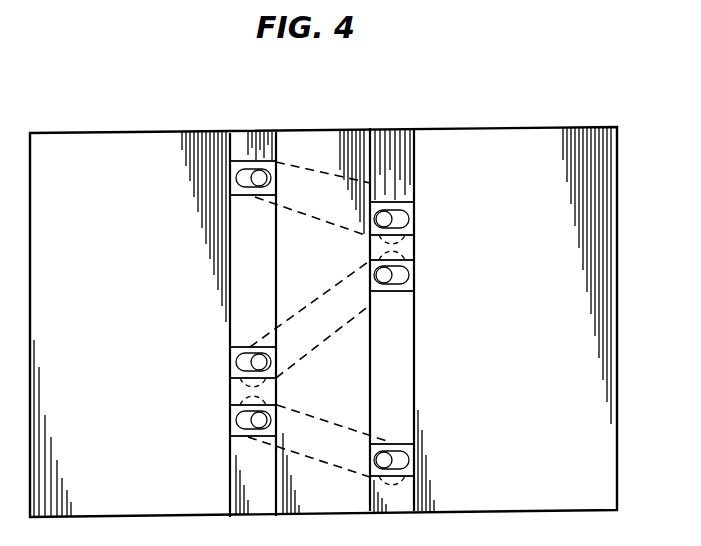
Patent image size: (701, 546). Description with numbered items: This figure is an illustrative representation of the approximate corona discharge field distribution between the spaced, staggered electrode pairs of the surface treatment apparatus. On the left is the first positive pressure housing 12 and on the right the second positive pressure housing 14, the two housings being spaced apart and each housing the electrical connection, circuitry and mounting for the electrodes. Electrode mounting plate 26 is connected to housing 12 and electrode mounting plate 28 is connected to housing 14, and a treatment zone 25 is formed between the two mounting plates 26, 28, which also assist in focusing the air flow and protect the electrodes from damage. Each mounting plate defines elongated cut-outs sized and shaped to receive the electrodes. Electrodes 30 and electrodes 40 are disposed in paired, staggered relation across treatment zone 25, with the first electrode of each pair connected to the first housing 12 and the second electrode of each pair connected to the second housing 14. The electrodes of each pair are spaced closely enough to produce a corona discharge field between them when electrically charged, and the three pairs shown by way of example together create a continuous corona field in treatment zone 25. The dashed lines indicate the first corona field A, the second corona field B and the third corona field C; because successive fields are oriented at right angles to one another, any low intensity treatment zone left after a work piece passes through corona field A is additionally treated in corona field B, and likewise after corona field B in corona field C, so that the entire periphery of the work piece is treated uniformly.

The positive pressure housing 12 is at (130, 281).
The positive pressure housing 14 is at (552, 343).
The treatment zone 25 is at (311, 130).
The electrode mounting plate 26 is at (255, 131).
The electrode mounting plate 28 is at (384, 128).
The electrodes 30 is at (262, 161).
The electrodes 40 is at (415, 216).
The first corona field A is at (350, 182).
The second corona field B is at (362, 316).
The third corona field C is at (365, 418).